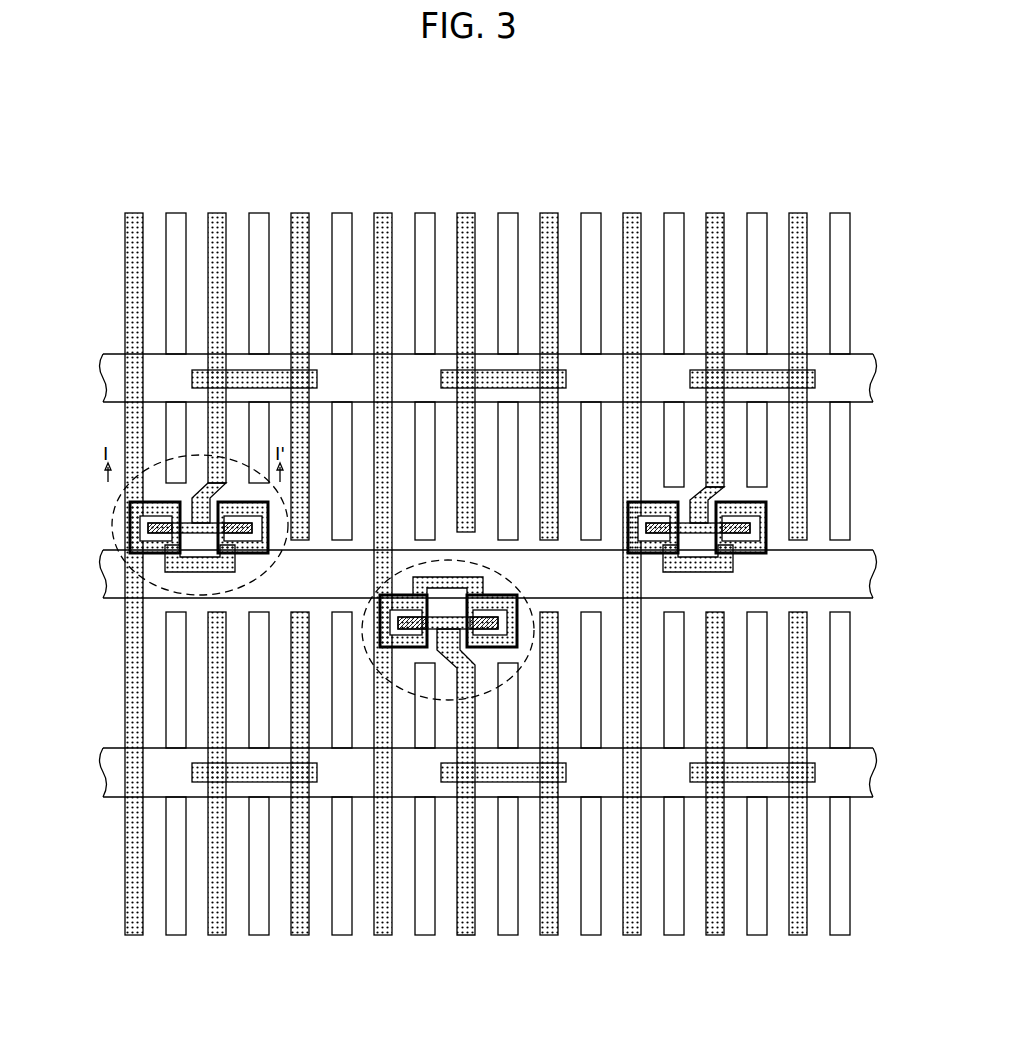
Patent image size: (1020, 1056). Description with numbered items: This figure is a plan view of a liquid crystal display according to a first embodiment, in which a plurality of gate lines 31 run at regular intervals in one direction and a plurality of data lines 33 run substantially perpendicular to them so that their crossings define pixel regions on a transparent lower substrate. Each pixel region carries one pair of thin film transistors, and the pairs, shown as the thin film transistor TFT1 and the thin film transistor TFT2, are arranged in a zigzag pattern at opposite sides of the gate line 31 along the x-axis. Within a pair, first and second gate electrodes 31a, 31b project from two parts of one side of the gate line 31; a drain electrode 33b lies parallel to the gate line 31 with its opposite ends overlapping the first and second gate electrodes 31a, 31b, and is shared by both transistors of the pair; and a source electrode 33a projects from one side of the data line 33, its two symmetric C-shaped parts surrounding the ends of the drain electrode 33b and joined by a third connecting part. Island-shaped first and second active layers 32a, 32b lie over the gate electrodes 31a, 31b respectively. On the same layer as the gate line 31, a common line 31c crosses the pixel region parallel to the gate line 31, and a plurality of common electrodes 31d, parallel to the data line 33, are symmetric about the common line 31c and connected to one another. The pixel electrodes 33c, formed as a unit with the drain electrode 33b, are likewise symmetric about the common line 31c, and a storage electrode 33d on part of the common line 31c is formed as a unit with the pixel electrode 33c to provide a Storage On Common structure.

The gate line 31 is at (103, 575).
The first gate electrode 31a is at (152, 502).
The second gate electrode 31b is at (266, 500).
The common line 31c is at (103, 370).
The common electrodes 31d is at (258, 217).
The first active layer 32a is at (130, 527).
The second active layer 32b is at (257, 558).
The data line 33 is at (128, 275).
The source electrode 33a is at (232, 505).
The drain electrode 33b is at (228, 535).
The pixel electrodes 33c is at (302, 315).
The storage electrode 33d is at (282, 378).
The thin film transistor TFT1 is at (130, 503).
The thin film transistor TFT2 is at (510, 584).